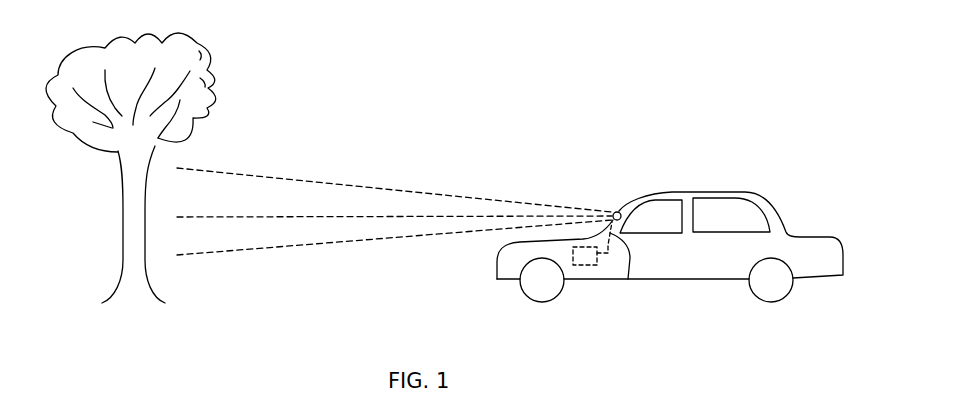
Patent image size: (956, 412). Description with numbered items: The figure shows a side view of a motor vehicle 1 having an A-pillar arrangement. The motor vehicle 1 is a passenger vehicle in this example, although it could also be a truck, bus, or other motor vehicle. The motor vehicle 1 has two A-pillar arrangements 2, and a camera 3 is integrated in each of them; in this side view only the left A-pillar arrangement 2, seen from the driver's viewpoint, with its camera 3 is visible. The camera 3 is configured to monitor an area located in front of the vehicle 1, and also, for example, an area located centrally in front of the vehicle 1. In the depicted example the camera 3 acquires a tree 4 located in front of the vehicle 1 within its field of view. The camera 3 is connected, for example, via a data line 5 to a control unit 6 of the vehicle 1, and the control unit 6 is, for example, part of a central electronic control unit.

The motor vehicle 1 is at (830, 148).
The A-pillar arrangement 2 is at (616, 211).
The camera 3 is at (622, 205).
The tree 4 is at (195, 38).
The data line 5 is at (628, 279).
The control unit 6 is at (587, 265).